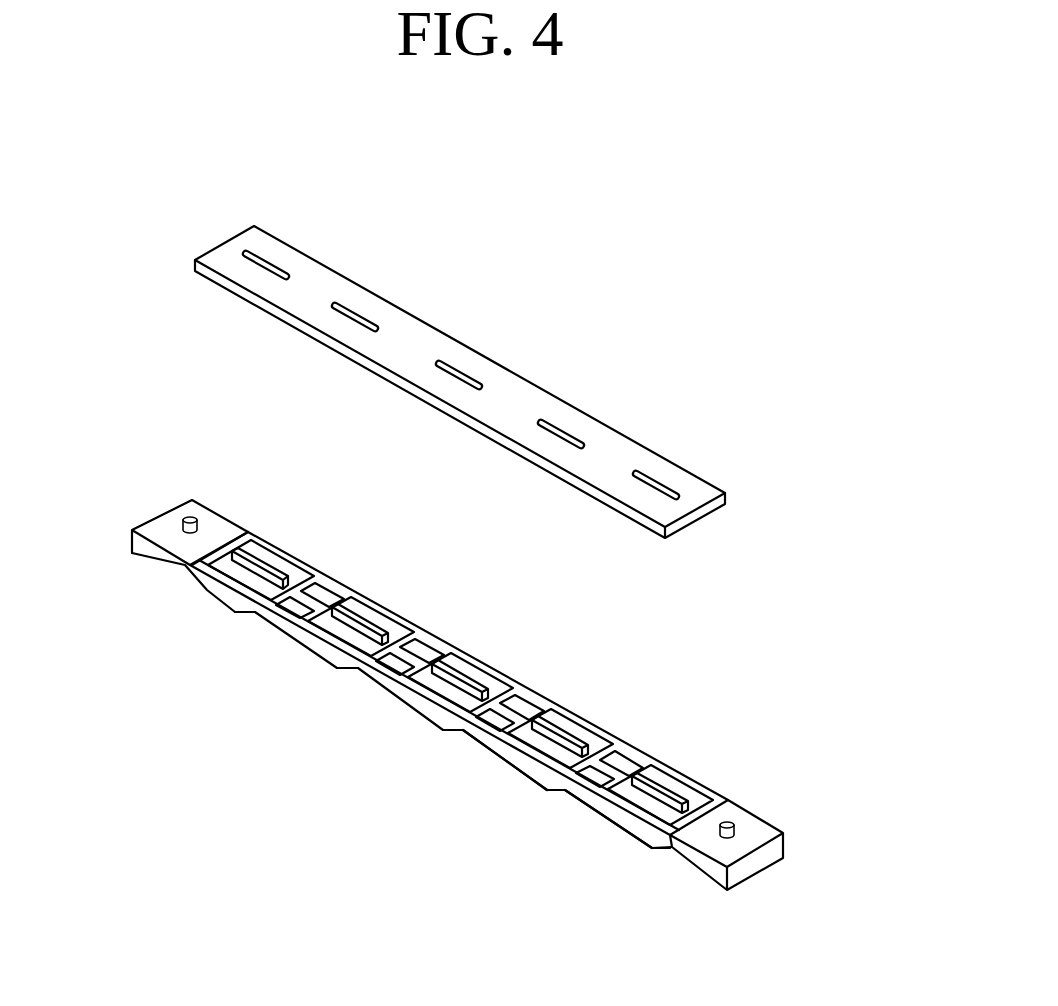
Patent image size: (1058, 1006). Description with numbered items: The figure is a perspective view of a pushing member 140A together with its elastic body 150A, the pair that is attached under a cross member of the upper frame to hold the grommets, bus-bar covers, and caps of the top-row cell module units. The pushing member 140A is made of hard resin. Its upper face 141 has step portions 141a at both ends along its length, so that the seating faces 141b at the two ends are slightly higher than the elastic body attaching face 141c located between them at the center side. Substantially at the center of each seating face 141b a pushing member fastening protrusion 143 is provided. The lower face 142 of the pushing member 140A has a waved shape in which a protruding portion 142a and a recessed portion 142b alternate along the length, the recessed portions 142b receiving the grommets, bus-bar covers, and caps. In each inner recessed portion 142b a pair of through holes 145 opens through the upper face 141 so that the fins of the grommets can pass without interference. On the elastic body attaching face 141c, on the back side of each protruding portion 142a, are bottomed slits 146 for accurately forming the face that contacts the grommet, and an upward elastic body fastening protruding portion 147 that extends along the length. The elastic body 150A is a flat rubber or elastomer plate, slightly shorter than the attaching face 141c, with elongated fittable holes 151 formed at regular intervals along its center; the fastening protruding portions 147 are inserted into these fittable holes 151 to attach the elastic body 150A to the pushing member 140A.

The pushing member 140A is at (498, 700).
The upper face 141 is at (459, 641).
The step portion 141a is at (237, 531).
The seating face 141b is at (157, 525).
The elastic body attaching face 141c is at (551, 713).
The lower face 142 is at (451, 775).
The protruding portion 142a is at (533, 782).
The recessed portion 142b is at (485, 738).
The pushing member fastening protrusion 143 is at (189, 517).
The through hole 145 is at (409, 638).
The slit 146 is at (690, 792).
The elastic body fastening protruding portion 147 is at (648, 765).
The elastic body 150A is at (460, 382).
The fittable hole 151 is at (458, 376).